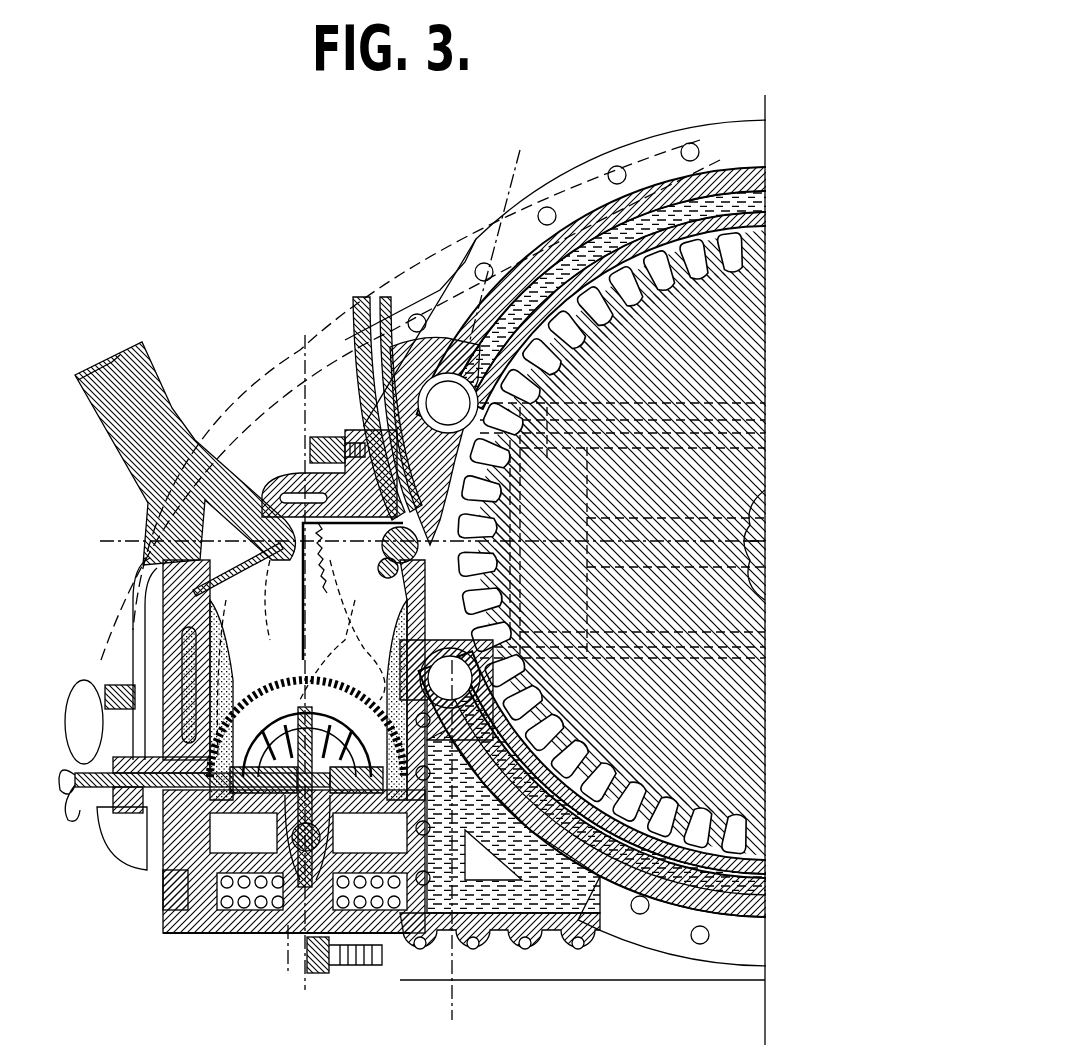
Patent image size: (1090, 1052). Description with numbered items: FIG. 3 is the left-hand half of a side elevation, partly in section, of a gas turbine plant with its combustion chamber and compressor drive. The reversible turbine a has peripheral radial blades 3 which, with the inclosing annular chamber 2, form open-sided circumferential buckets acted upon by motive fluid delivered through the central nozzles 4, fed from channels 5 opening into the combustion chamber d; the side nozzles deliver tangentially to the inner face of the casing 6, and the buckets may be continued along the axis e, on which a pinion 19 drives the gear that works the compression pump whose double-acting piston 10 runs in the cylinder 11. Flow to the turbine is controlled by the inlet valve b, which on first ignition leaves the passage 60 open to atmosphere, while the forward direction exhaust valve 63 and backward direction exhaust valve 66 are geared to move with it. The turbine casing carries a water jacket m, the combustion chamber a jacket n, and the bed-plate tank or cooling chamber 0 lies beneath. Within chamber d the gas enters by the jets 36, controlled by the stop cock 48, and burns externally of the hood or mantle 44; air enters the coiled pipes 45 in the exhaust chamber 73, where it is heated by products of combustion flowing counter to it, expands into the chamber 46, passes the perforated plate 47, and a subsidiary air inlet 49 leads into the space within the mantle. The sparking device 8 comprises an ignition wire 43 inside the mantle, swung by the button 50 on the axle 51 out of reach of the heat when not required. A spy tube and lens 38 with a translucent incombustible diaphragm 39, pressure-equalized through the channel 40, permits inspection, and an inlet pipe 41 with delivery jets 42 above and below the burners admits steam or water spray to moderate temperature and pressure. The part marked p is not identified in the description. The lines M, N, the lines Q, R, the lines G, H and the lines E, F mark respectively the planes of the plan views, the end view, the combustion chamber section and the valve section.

The annular chamber 2 is at (617, 270).
The turbine a is at (673, 300).
The peripheral radial blades 3 is at (724, 198).
The central delivery nozzles 4 is at (604, 543).
The channels 5 is at (384, 568).
The casing 6 is at (675, 845).
The bed-plate tank or cooling chamber 0 is at (552, 910).
The sparking device 8 is at (175, 789).
The piston 10 is at (626, 310).
The cylinder 11 is at (770, 470).
The pinion 19 is at (752, 520).
The burners 36 is at (243, 833).
The spy tube and lens 38 is at (140, 440).
The diaphragm 39 is at (245, 550).
The channel 40 is at (140, 568).
The inlet pipe 41 is at (271, 408).
The delivery jets 42 is at (226, 628).
The ignition wire 43 is at (318, 700).
The hood or mantle 44 is at (257, 690).
The air pipes 45 is at (240, 893).
The chamber 46 is at (268, 865).
The perforated plate 47 is at (163, 910).
The stop cock 48 is at (250, 930).
The subsidiary air inlet 49 is at (333, 838).
The button 50 is at (80, 700).
The axle 51 is at (95, 805).
The passage 60 is at (375, 300).
The forward direction exhaust valve 63 is at (450, 678).
The backward direction exhaust valve 66 is at (441, 568).
The exhaust chamber 73 is at (346, 975).
The inlet valve b is at (340, 545).
The combustion chamber d is at (277, 600).
The axle e is at (766, 545).
The turbine casing jacket m is at (537, 293).
The combustion chamber jacket n is at (190, 655).
The plate p is at (290, 905).
The section line Q, R Q is at (751, 555).
The section line Q R is at (759, 1038).
The section line E, F E is at (500, 229).
The section line G, H G is at (304, 646).
The section line M, N M is at (417, 525).
The section line M N is at (768, 526).
The section line G H is at (278, 963).
The section line E F is at (448, 853).